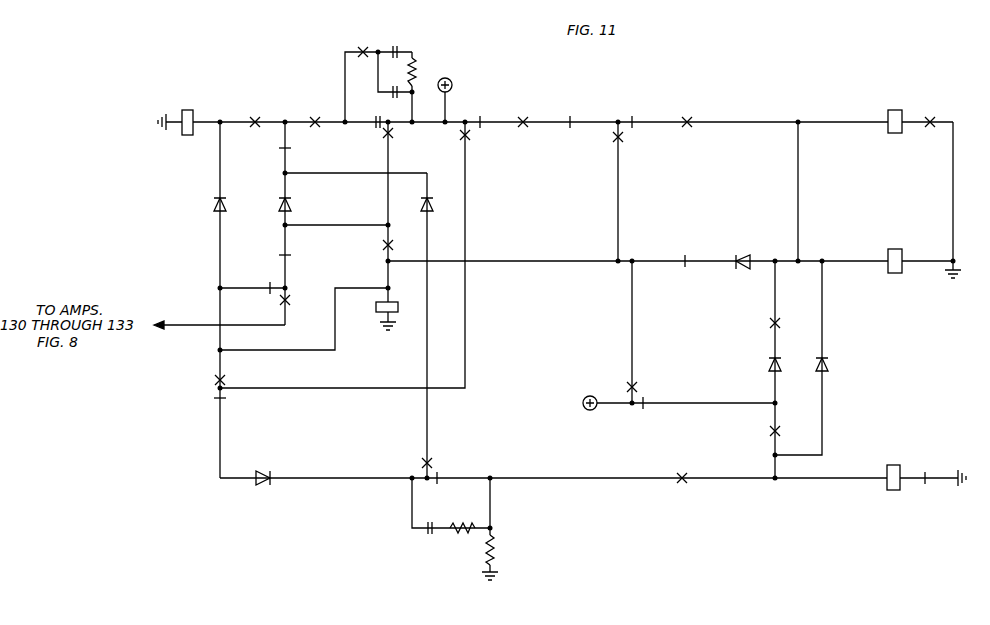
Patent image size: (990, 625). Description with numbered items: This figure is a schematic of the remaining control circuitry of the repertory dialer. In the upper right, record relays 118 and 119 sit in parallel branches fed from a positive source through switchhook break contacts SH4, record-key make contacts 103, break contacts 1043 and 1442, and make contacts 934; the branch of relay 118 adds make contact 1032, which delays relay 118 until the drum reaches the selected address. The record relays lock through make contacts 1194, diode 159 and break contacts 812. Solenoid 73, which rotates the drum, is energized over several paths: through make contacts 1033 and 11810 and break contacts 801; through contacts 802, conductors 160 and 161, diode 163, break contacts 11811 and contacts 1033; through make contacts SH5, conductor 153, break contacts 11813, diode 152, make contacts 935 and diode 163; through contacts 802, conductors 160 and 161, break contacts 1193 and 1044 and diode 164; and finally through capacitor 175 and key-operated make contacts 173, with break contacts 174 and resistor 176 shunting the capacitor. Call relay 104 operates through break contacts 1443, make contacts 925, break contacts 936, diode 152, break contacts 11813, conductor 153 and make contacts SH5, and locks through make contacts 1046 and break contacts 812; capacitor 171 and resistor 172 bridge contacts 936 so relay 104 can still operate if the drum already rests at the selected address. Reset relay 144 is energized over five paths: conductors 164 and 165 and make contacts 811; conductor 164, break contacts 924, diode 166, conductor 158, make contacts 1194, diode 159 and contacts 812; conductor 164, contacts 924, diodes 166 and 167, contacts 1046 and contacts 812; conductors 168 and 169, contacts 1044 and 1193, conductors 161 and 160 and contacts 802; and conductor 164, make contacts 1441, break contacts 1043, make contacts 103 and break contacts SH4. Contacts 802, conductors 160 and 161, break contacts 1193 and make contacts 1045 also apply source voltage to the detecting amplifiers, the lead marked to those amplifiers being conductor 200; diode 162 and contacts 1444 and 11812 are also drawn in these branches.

The solenoid 73 is at (189, 110).
The make contacts 1033 is at (260, 108).
The make contacts 11810 is at (319, 108).
The make contacts 173 is at (360, 46).
The break contacts 174 is at (397, 46).
The capacitor 175 is at (392, 98).
The resistor 176 is at (416, 70).
The break contacts 801 is at (375, 129).
The make contacts 802 is at (394, 134).
The switchhook break contacts SH4 is at (480, 115).
The switchhook make contacts SH5 is at (470, 138).
The RECORD KEY make contacts 103 is at (523, 128).
The break contacts 1043 is at (568, 114).
The break contacts 1442 is at (628, 114).
The make contacts 1441 is at (624, 139).
The make contacts 934 is at (686, 116).
The record relay 118 is at (897, 100).
The make contact 1032 is at (930, 115).
The record relay 119 is at (895, 248).
The conductor 169 is at (218, 300).
The break contacts 11811 is at (277, 148).
The diode 164 is at (212, 205).
The diode 162 is at (273, 205).
The diode 163 is at (434, 206).
The conductor 160 is at (384, 190).
The conductor 161 is at (327, 214).
The break contacts 1193 is at (278, 254).
The contact 144-4 1444 is at (382, 245).
The break contacts 1044 is at (269, 282).
The make contacts 1045 is at (291, 300).
The reset relay 144 is at (374, 305).
The output conductor to amplifiers 200 is at (202, 332).
The conductor 168 is at (290, 354).
The contact 118-12 11812 is at (214, 380).
The break contacts 11813 is at (214, 400).
The conductor 153 is at (290, 393).
The break contacts 924 is at (683, 254).
The diode 166 is at (746, 254).
The conductor 165 is at (628, 310).
The make contacts 811 is at (637, 387).
The break contacts 812 is at (645, 410).
The conductor 158 is at (772, 295).
The make contacts 1194 is at (768, 323).
The diode 159 is at (767, 365).
The diode 167 is at (830, 368).
The make contacts 1046 is at (769, 431).
The diode 152 is at (265, 486).
The make contacts 935 is at (420, 463).
The break contacts 936 is at (438, 470).
The make contacts 925 is at (679, 485).
The call relay 104 is at (893, 464).
The break contacts 1443 is at (926, 486).
The capacitor 171 is at (428, 535).
The resistor 172 is at (460, 536).